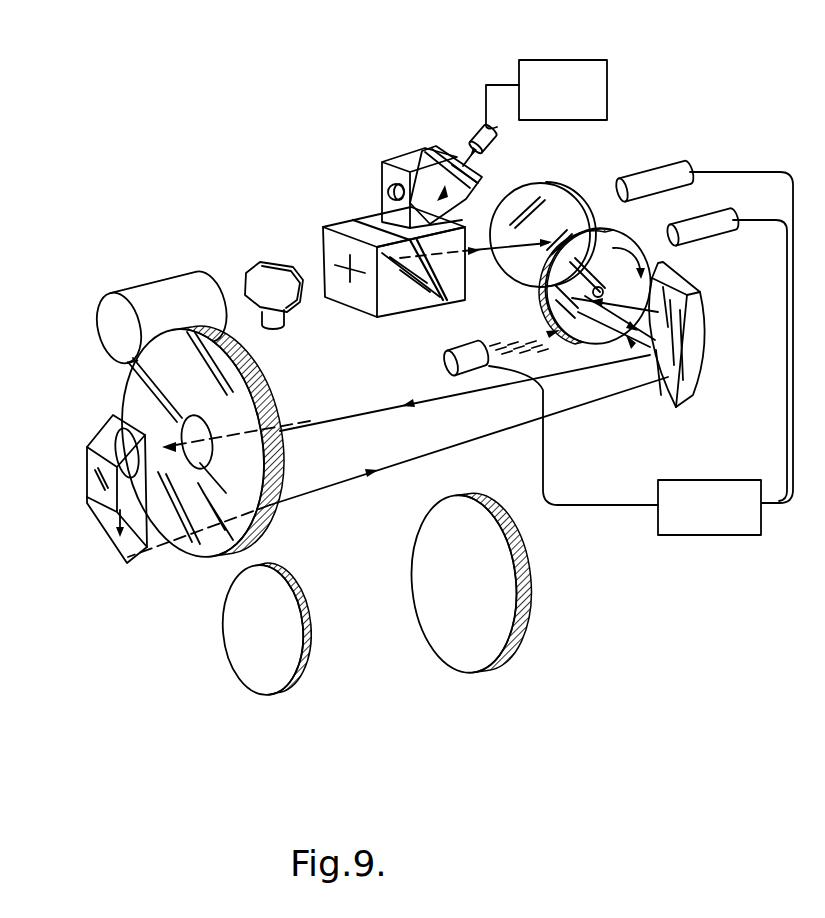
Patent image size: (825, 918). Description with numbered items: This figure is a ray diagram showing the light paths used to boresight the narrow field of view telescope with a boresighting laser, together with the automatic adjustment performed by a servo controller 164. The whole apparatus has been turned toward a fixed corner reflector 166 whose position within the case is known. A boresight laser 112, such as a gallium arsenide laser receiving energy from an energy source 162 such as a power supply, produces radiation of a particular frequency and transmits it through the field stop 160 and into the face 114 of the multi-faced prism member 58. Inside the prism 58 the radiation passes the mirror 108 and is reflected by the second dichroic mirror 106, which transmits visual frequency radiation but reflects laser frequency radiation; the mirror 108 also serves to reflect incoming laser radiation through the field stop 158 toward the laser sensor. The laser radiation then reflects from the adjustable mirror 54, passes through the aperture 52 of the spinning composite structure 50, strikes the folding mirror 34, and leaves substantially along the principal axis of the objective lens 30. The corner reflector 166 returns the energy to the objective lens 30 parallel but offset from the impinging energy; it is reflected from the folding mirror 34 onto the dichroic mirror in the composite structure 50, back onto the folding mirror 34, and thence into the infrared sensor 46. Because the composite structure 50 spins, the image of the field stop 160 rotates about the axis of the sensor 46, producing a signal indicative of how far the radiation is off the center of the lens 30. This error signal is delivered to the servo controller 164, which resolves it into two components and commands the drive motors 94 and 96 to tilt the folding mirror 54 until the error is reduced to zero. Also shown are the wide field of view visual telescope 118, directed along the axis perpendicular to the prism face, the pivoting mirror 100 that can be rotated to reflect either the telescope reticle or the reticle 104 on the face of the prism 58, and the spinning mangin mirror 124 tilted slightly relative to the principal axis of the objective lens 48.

The objective lens 30 is at (268, 516).
The folding mirror 34 is at (693, 334).
The infrared sensor 46 is at (446, 347).
The objective lens 48 is at (310, 635).
The composite structure 50 is at (545, 294).
The aperture 52 is at (548, 318).
The adjustable mirror 54 is at (560, 191).
The multi-faced prism member 58 is at (395, 303).
The drive motor 94 is at (670, 171).
The drive motor 96 is at (678, 222).
The mirror 100 is at (274, 263).
The reticle 104 is at (347, 286).
The second dichroic mirror 106 is at (424, 300).
The mirror 108 is at (472, 188).
The boresight laser 112 is at (497, 144).
The face 114 is at (381, 173).
The wide field of view visual telescope 118 is at (148, 297).
The spinning mangin mirror 124 is at (530, 617).
The field stop 158 is at (387, 190).
The field stop 160 is at (455, 155).
The energy source 162 is at (592, 62).
The servo controller 164 is at (700, 488).
The corner reflector 166 is at (87, 484).